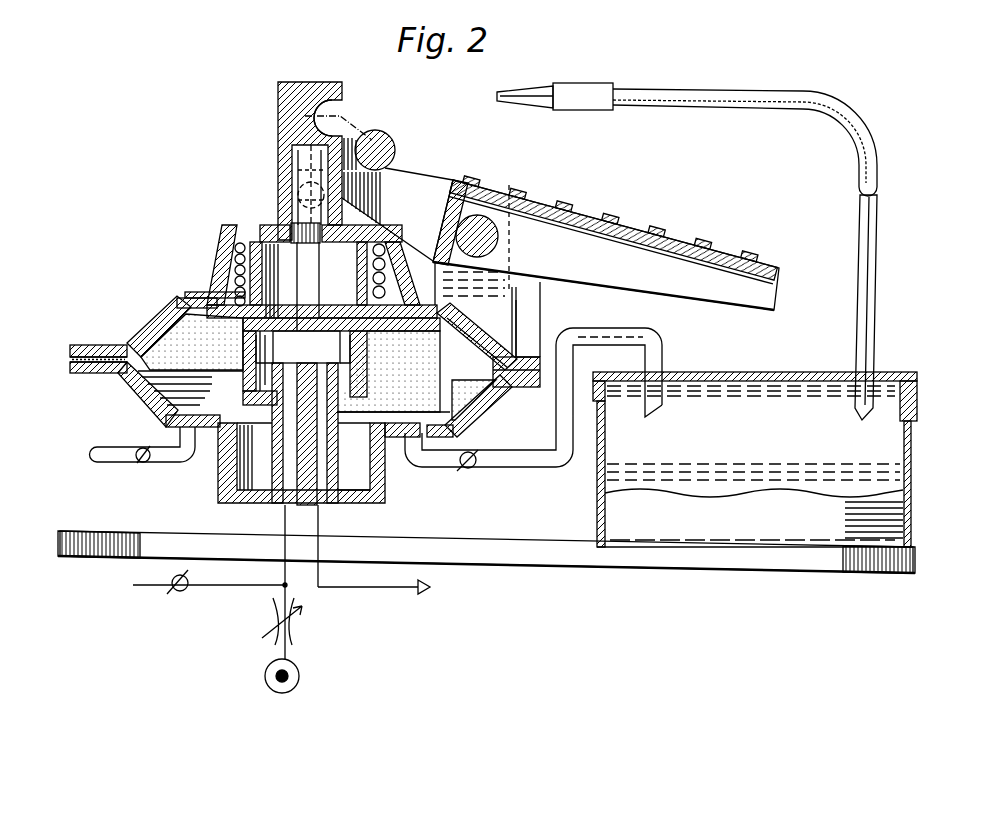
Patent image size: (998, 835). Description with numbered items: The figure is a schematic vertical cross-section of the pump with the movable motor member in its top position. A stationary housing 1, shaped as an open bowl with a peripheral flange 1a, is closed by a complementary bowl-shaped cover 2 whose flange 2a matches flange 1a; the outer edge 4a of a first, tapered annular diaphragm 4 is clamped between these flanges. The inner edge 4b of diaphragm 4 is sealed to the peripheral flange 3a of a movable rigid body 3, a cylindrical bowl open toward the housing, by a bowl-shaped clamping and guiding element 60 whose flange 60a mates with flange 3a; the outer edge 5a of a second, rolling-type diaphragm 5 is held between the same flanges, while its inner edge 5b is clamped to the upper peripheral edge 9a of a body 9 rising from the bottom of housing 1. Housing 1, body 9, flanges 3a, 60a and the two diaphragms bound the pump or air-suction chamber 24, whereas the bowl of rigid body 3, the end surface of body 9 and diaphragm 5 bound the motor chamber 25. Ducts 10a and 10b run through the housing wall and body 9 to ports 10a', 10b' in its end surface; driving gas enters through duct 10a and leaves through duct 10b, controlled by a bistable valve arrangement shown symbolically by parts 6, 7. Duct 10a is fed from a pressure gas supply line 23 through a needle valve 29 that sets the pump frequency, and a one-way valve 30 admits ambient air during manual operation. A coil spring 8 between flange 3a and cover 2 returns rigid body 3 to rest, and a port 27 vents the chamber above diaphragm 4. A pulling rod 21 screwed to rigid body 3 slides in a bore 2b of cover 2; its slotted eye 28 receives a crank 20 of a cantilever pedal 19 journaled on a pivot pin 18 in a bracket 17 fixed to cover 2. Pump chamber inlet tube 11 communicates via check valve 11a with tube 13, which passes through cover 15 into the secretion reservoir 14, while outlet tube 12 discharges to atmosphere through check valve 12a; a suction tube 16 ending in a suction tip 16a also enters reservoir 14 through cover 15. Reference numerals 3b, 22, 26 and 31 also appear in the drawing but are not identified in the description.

The stationary housing 1 is at (125, 376).
The peripheral flange 1a is at (88, 370).
The cover 2 is at (135, 342).
The peripheral flange 2a is at (76, 345).
The bore 2b is at (266, 225).
The movable rigid body 3 is at (234, 258).
The peripheral flange 3a is at (178, 303).
The spring 3b is at (388, 282).
The first annular flexible diaphragm 4 is at (160, 388).
The outer edge 4a is at (70, 357).
The inner edge 4b is at (170, 323).
The second annular flexible diaphragm 5 is at (367, 398).
The outer edge 5a is at (253, 345).
The inner edge 5b is at (367, 371).
The valve arrangement part 6 is at (312, 333).
The valve arrangement part 7 is at (319, 278).
The return spring 8 is at (230, 232).
The body 9 is at (240, 500).
The upper peripheral edge 9a is at (247, 402).
The duct 10a is at (278, 475).
The port 10a' is at (284, 286).
The duct 10b is at (346, 475).
The port 10b' is at (386, 464).
The inlet tube 11 is at (437, 458).
The check valve 11a is at (474, 467).
The outlet tube 12 is at (170, 462).
The check valve 12a is at (143, 462).
The tube 13 is at (607, 338).
The secretion reservoir 14 is at (905, 478).
The cover 15 is at (772, 372).
The suction tube 16 is at (859, 224).
The suction tip 16a is at (590, 95).
The bracket 17 is at (563, 350).
The pivot pin 18 is at (483, 222).
The cantilever pedal 19 is at (567, 247).
The crank 20 is at (387, 143).
The pulling rod 21 is at (277, 110).
The base plate 22 is at (575, 560).
The pressure gas supply line 23 is at (296, 686).
The pump chamber 24 is at (452, 388).
The motor chamber 25 is at (262, 282).
The partition flange 26 is at (521, 341).
The port 27 is at (193, 297).
The slotted eye 28 is at (320, 113).
The needle valve 29 is at (296, 632).
The one-way valve 30 is at (180, 591).
The outlet line 31 is at (367, 588).
The clamping and guiding element 60 is at (450, 432).
The flange 60a is at (458, 308).